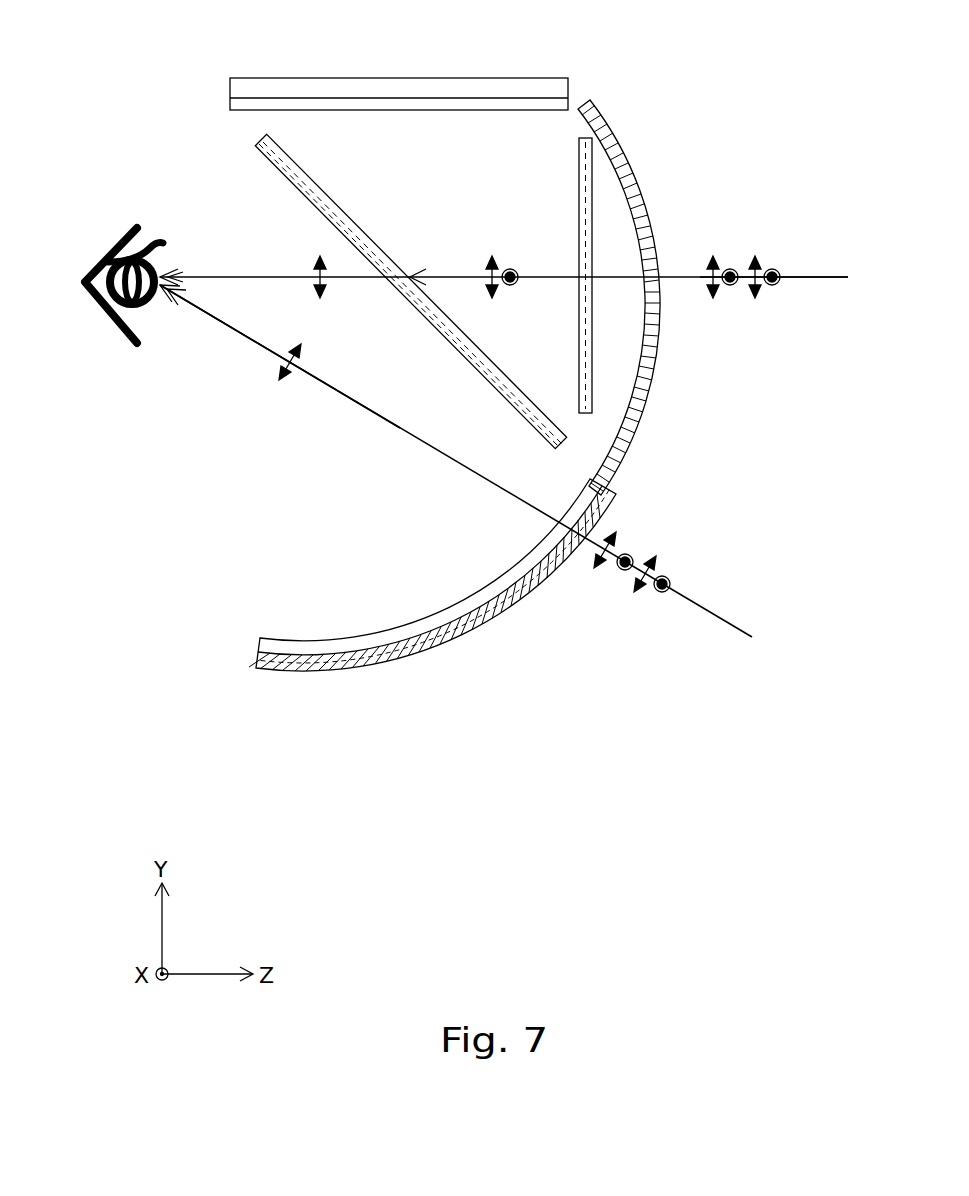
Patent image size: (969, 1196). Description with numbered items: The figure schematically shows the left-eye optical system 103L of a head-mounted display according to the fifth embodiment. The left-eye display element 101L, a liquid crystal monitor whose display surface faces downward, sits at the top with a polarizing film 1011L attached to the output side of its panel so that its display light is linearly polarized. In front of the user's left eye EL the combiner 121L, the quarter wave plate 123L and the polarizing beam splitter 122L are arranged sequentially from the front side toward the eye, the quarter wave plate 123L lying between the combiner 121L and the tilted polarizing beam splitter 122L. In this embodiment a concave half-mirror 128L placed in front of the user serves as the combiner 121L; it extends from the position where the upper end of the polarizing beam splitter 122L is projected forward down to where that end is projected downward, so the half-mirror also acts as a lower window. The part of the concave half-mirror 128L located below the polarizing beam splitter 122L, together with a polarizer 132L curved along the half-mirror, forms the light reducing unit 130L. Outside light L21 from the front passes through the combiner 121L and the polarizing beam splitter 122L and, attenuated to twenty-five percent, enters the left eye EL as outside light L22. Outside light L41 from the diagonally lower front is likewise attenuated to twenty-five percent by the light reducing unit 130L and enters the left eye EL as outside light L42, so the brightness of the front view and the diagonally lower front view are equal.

The left-eye display element 101L is at (325, 78).
The polarizing film 1011L is at (510, 103).
The left-eye optical system 103L is at (650, 92).
The polarizing beam splitter 122L is at (258, 143).
The 1/4 wave plate 123L is at (578, 166).
The combiner 121L is at (637, 191).
The concave half-mirror 128L is at (647, 417).
The light reducing unit 130L is at (297, 683).
The polarizer 132L is at (368, 632).
The left eye EL is at (118, 337).
The outside light L22 is at (247, 276).
The outside light L21 is at (812, 282).
The outside light L41 is at (721, 615).
The outside light L42 is at (278, 352).